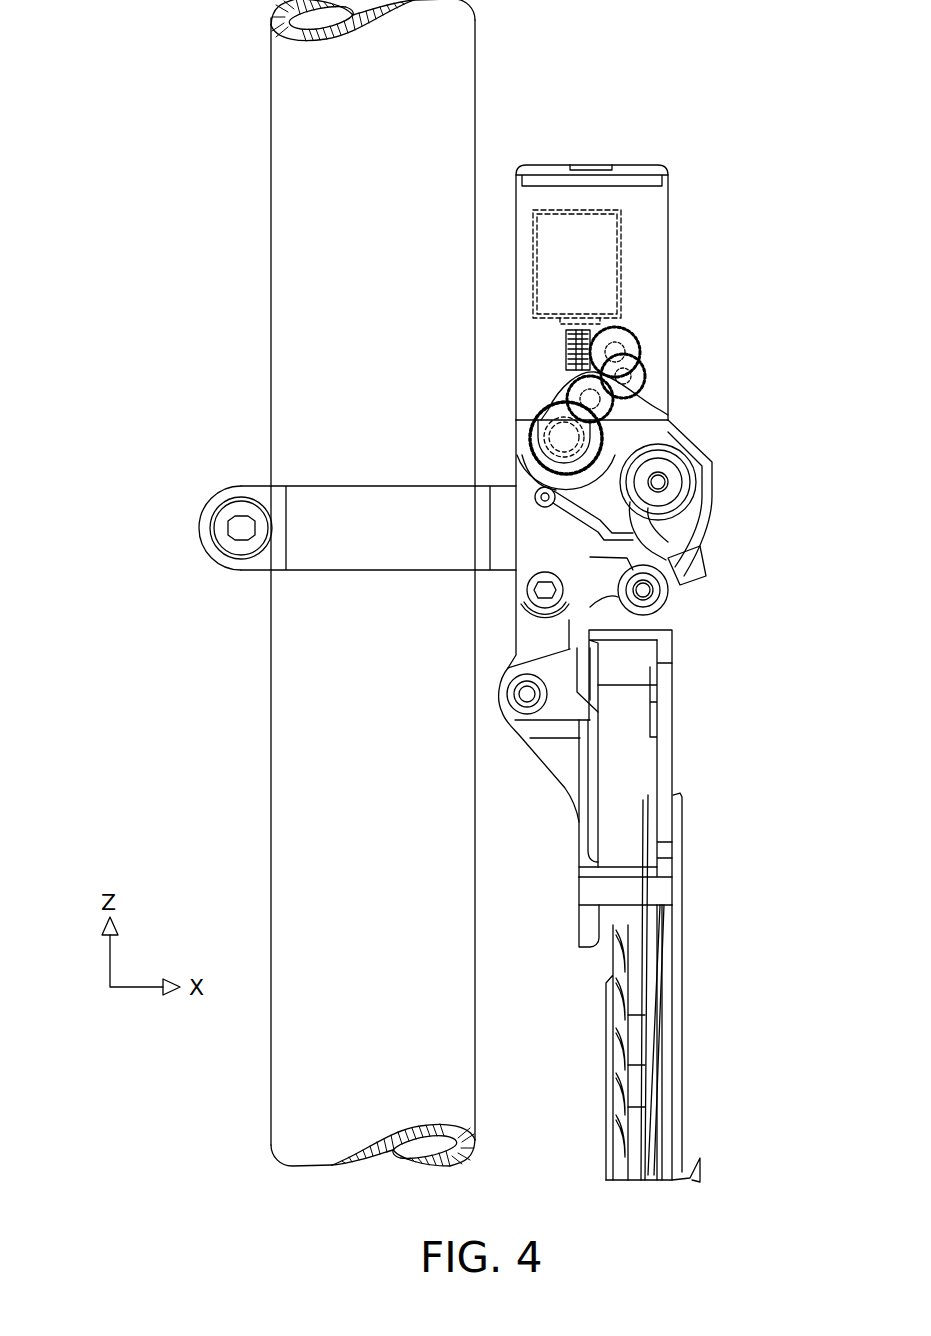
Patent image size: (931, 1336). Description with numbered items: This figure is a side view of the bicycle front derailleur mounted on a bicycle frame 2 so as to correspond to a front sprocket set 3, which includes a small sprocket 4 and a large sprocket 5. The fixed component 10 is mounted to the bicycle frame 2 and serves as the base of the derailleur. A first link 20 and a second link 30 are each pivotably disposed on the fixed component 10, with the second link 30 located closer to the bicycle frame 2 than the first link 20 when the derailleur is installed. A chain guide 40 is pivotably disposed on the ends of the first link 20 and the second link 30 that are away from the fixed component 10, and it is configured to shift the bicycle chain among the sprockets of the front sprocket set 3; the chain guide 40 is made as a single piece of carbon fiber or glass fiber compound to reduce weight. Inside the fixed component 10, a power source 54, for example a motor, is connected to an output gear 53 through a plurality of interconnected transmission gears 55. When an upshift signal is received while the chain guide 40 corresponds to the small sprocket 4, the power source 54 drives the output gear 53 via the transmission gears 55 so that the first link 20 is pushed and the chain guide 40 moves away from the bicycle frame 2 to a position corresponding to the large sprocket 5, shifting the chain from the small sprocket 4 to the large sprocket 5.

The bicycle frame 2 is at (295, 338).
The front sprocket set 3 is at (694, 1039).
The small sprocket 4 is at (620, 1033).
The large sprocket 5 is at (668, 1086).
The fixed component 10 is at (548, 542).
The first link 20 is at (697, 542).
The second link 30 is at (530, 646).
The chain guide 40 is at (680, 692).
The output gear 53 is at (648, 470).
The power source 54 is at (578, 230).
The transmission gears 55 is at (640, 334).